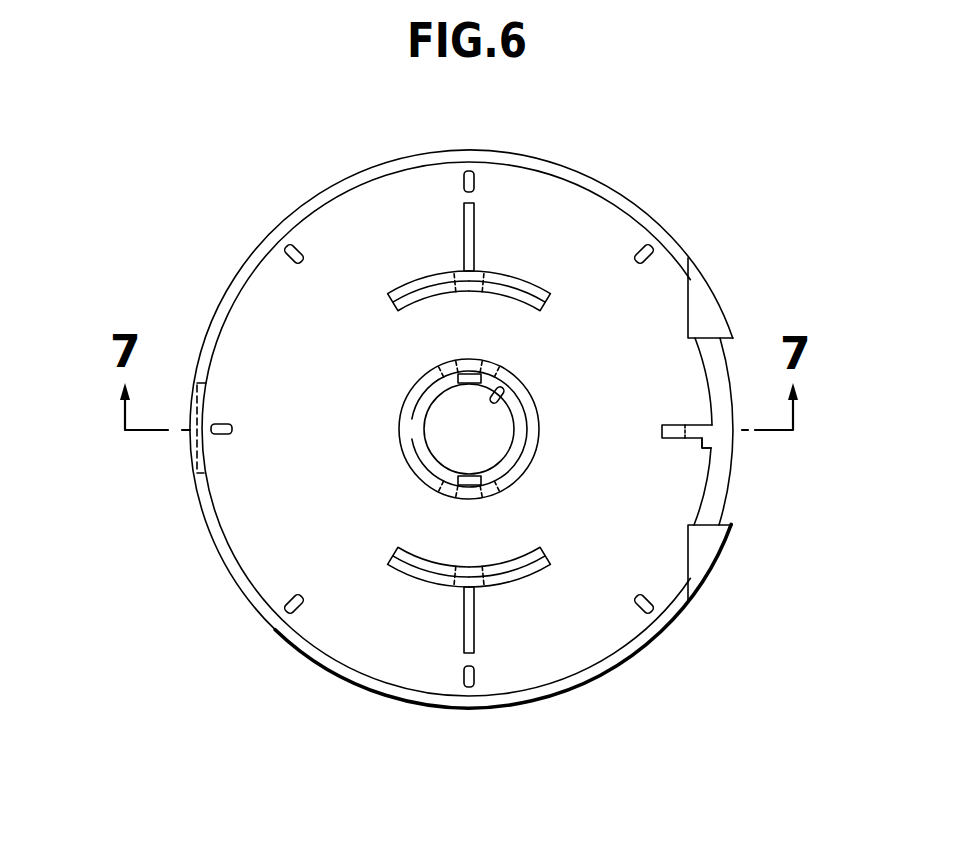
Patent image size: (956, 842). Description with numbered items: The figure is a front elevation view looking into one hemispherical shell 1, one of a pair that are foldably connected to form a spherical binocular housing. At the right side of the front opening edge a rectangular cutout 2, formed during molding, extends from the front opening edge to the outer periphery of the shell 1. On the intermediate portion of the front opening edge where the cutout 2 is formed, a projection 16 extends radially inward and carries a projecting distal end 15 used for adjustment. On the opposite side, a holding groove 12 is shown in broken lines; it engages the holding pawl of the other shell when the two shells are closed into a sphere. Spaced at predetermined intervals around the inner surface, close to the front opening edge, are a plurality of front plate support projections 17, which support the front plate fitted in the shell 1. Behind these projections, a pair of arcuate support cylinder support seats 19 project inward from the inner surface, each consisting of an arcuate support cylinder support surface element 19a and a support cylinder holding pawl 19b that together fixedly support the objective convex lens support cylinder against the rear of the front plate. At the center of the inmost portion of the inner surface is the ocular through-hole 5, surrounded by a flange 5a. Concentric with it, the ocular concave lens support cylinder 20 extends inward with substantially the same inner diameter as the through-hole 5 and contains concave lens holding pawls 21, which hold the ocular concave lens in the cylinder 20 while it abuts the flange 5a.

The hemispherical shell 1 is at (550, 163).
The rectangular cutout 2 is at (694, 532).
The ocular through-hole 5 is at (512, 380).
The flange 5a is at (506, 404).
The holding groove 12 is at (205, 398).
The projecting distal end 15 is at (676, 433).
The projection 16 is at (692, 433).
The front plate support projection 17 is at (469, 171).
The support cylinder support seat 19 is at (467, 432).
The support cylinder support surface element 19a is at (400, 300).
The support cylinder holding pawl 19b is at (540, 300).
The ocular concave lens support cylinder 20 is at (526, 462).
The concave lens holding pawl 21 is at (466, 385).